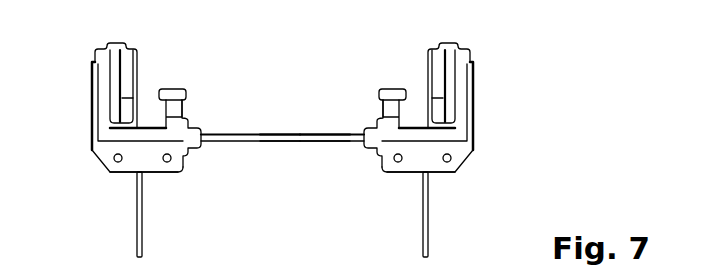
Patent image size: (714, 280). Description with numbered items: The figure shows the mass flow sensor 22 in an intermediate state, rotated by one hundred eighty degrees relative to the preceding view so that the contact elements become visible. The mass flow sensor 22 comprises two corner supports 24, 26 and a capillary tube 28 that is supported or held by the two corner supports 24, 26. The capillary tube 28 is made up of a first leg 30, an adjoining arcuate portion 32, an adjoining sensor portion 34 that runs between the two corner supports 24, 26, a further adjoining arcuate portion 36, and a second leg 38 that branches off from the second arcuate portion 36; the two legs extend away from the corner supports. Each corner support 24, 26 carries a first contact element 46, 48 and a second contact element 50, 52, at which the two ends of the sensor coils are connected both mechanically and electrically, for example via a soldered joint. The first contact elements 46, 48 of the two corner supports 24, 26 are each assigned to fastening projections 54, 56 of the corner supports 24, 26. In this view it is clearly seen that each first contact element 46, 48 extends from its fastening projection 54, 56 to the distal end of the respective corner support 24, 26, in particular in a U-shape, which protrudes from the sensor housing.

The mass flow sensor 22 is at (286, 107).
The corner support 24 is at (470, 152).
The corner support 26 is at (100, 150).
The capillary tube 28 is at (326, 119).
The first leg 30 is at (430, 225).
The arcuate portion 32 is at (388, 188).
The sensor portion 34 is at (283, 142).
The second arcuate portion 36 is at (157, 188).
The second leg 38 is at (137, 224).
The first contact element 46 is at (466, 103).
The first contact element 48 is at (100, 83).
The second contact element 50 is at (438, 70).
The second contact element 52 is at (127, 65).
The fastening projection 54 is at (392, 98).
The fastening projection 56 is at (173, 97).